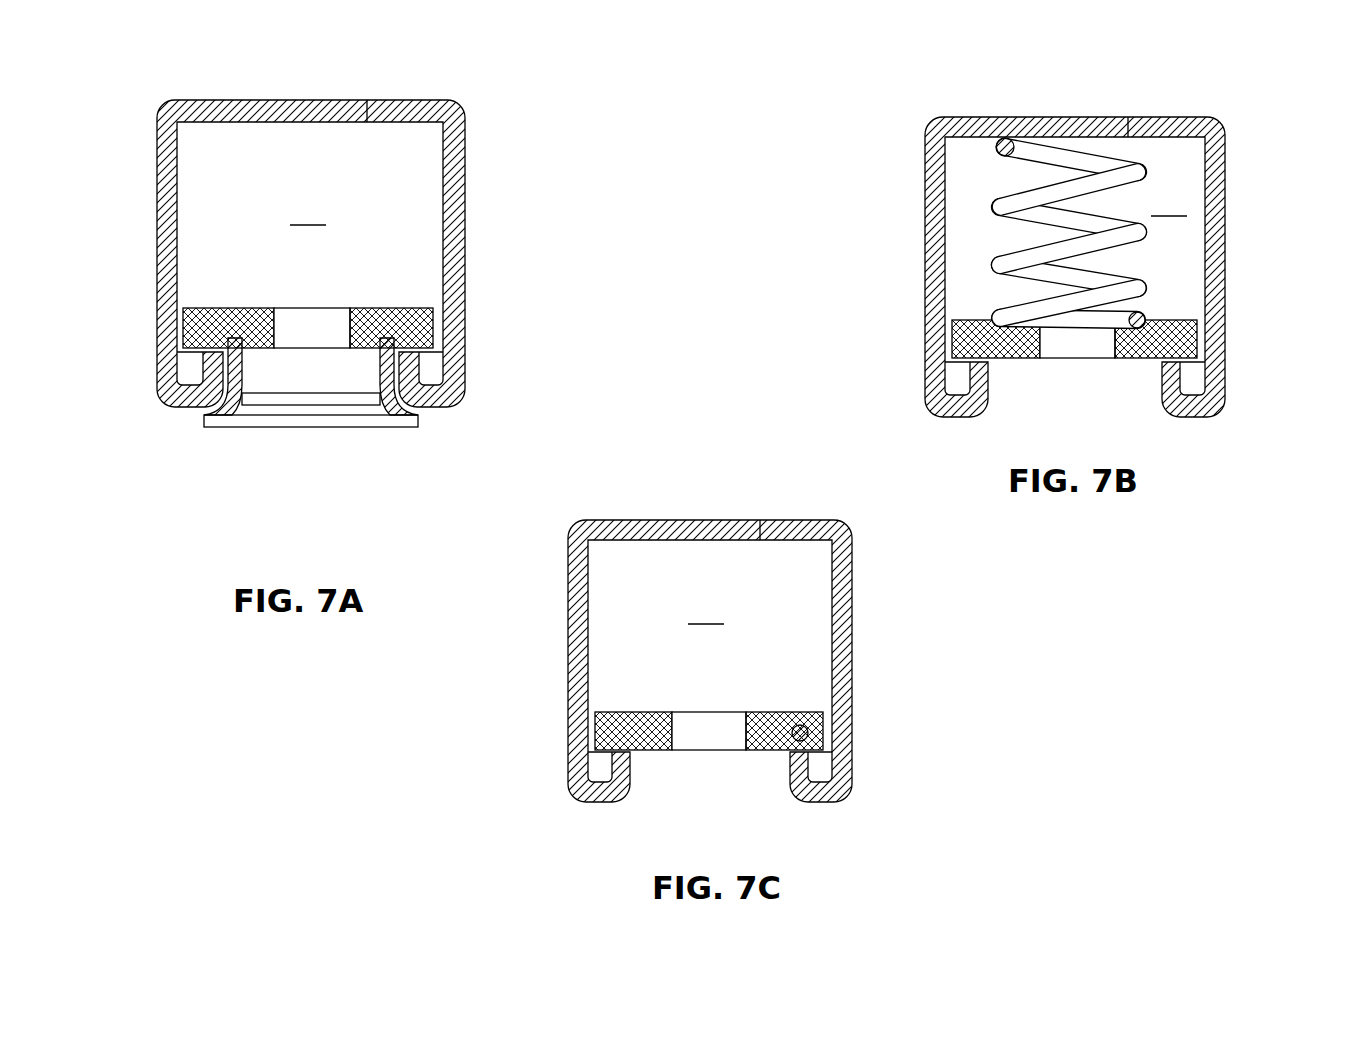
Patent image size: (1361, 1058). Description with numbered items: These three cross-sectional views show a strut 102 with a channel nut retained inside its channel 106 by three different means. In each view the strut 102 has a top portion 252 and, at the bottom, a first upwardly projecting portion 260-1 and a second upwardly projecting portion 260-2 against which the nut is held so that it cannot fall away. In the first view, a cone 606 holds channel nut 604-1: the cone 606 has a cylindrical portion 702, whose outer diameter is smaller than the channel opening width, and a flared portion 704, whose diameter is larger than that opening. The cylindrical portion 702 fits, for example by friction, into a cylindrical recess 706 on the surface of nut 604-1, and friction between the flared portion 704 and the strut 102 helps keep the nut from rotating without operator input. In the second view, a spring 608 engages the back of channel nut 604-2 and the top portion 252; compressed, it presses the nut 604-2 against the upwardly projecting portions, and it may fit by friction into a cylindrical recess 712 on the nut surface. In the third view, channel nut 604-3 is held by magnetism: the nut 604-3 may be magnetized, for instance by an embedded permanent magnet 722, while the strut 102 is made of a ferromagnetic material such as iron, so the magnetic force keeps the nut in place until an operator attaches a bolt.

In FIG. 7A, the strut 102 is at (466, 160).
In FIG. 7B, the strut 102 is at (927, 263).
In FIG. 7C, the strut 102 is at (679, 520).
In FIG. 7A, the channel 106 is at (308, 215).
In FIG. 7B, the channel 106 is at (1169, 206).
In FIG. 7C, the channel 106 is at (706, 614).
In FIG. 7B, the top portion 252 is at (1067, 117).
In FIG. 7A, the first upwardly projecting portion 260-1 is at (207, 355).
In FIG. 7B, the first upwardly projecting portion 260-1 is at (977, 373).
In FIG. 7C, the first upwardly projecting portion 260-1 is at (618, 757).
In FIG. 7A, the second upwardly projecting portion 260-2 is at (410, 366).
In FIG. 7B, the second upwardly projecting portion 260-2 is at (1173, 376).
In FIG. 7C, the second upwardly projecting portion 260-2 is at (808, 768).
In FIG. 7A, the channel nut 604-1 is at (420, 318).
In FIG. 7B, the channel nut 604-2 is at (1173, 340).
In FIG. 7C, the channel nut 604-3 is at (653, 742).
In FIG. 7A, the cone 606 is at (299, 433).
In FIG. 7B, the spring 608 is at (1000, 212).
In FIG. 7A, the cylindrical portion 702 is at (385, 368).
In FIG. 7A, the flared portion 704 is at (245, 417).
In FIG. 7A, the cylindrical recess 706 is at (242, 338).
In FIG. 7B, the cylindrical recess 712 is at (1148, 322).
In FIG. 7C, the permanent magnet 722 is at (808, 733).